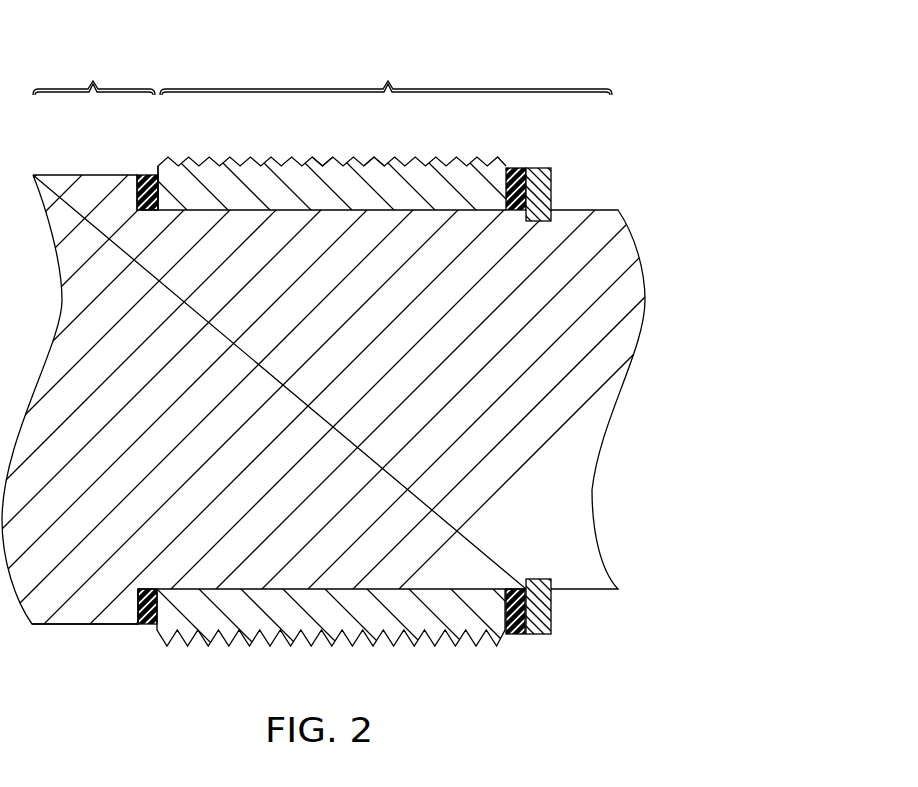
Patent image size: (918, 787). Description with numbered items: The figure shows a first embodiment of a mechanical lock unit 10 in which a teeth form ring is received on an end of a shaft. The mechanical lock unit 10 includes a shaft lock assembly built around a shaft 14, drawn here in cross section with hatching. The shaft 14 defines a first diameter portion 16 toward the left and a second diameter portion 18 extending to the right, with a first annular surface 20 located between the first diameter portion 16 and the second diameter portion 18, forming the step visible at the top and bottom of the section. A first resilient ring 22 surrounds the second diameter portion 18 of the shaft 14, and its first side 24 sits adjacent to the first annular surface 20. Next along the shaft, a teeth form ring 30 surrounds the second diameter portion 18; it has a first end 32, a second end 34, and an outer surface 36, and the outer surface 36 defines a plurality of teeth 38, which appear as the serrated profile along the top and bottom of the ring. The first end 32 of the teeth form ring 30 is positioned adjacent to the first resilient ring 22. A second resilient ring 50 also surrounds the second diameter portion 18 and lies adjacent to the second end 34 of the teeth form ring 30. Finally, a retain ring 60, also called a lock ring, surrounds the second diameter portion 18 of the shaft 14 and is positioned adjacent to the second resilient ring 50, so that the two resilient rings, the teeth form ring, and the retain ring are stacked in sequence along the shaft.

The mechanical lock unit 10 is at (167, 58).
The shaft 14 is at (572, 218).
The first diameter portion 16 is at (94, 74).
The second diameter portion 18 is at (386, 74).
The first annular surface 20 is at (143, 175).
The first resilient ring 22 is at (147, 626).
The first side 24 is at (137, 605).
The teeth form ring 30 is at (439, 188).
The first end 32 is at (158, 172).
The second end 34 is at (508, 167).
The outer surface 36 is at (316, 162).
The plurality of teeth 38 is at (366, 162).
The second resilient ring 50 is at (516, 636).
The retain ring 60 is at (543, 636).